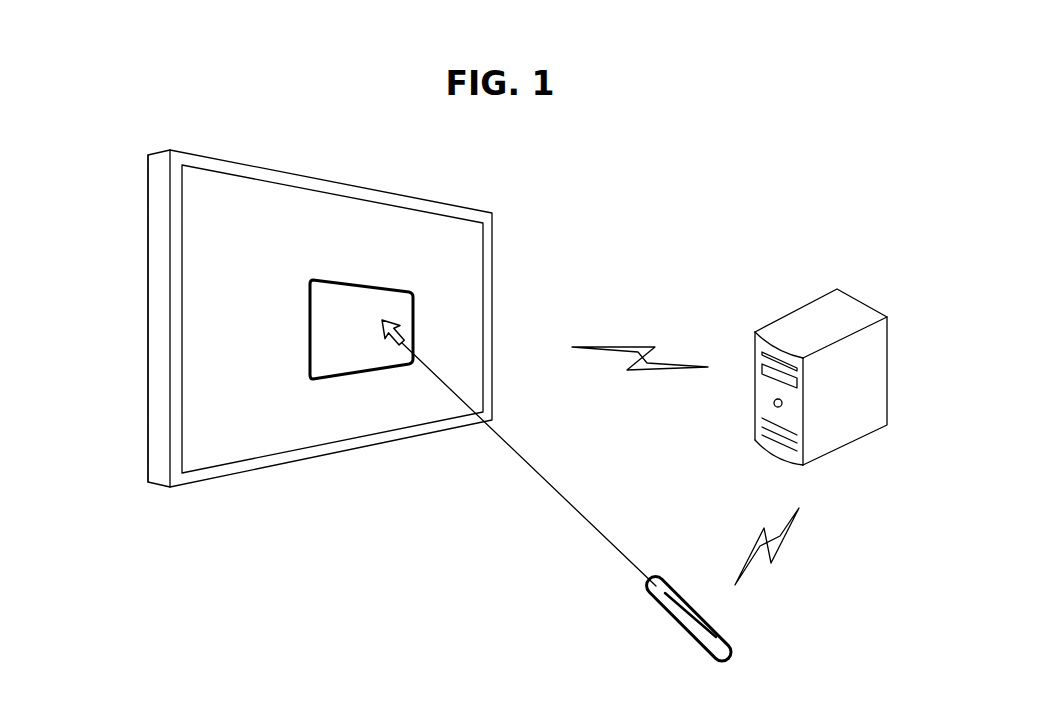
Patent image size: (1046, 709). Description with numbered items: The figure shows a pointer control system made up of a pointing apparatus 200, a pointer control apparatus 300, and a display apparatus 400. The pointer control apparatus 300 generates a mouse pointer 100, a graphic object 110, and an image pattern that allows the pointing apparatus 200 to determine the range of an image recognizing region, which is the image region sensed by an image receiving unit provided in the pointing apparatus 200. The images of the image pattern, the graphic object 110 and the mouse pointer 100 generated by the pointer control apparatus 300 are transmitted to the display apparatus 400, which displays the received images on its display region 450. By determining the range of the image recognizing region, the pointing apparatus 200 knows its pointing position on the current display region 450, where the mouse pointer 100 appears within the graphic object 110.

The mouse pointer 100 is at (392, 322).
The graphic object 110 is at (307, 300).
The pointing apparatus 200 is at (717, 628).
The pointer control apparatus 300 is at (865, 300).
The display apparatus 400 is at (157, 320).
The display region 450 is at (288, 200).